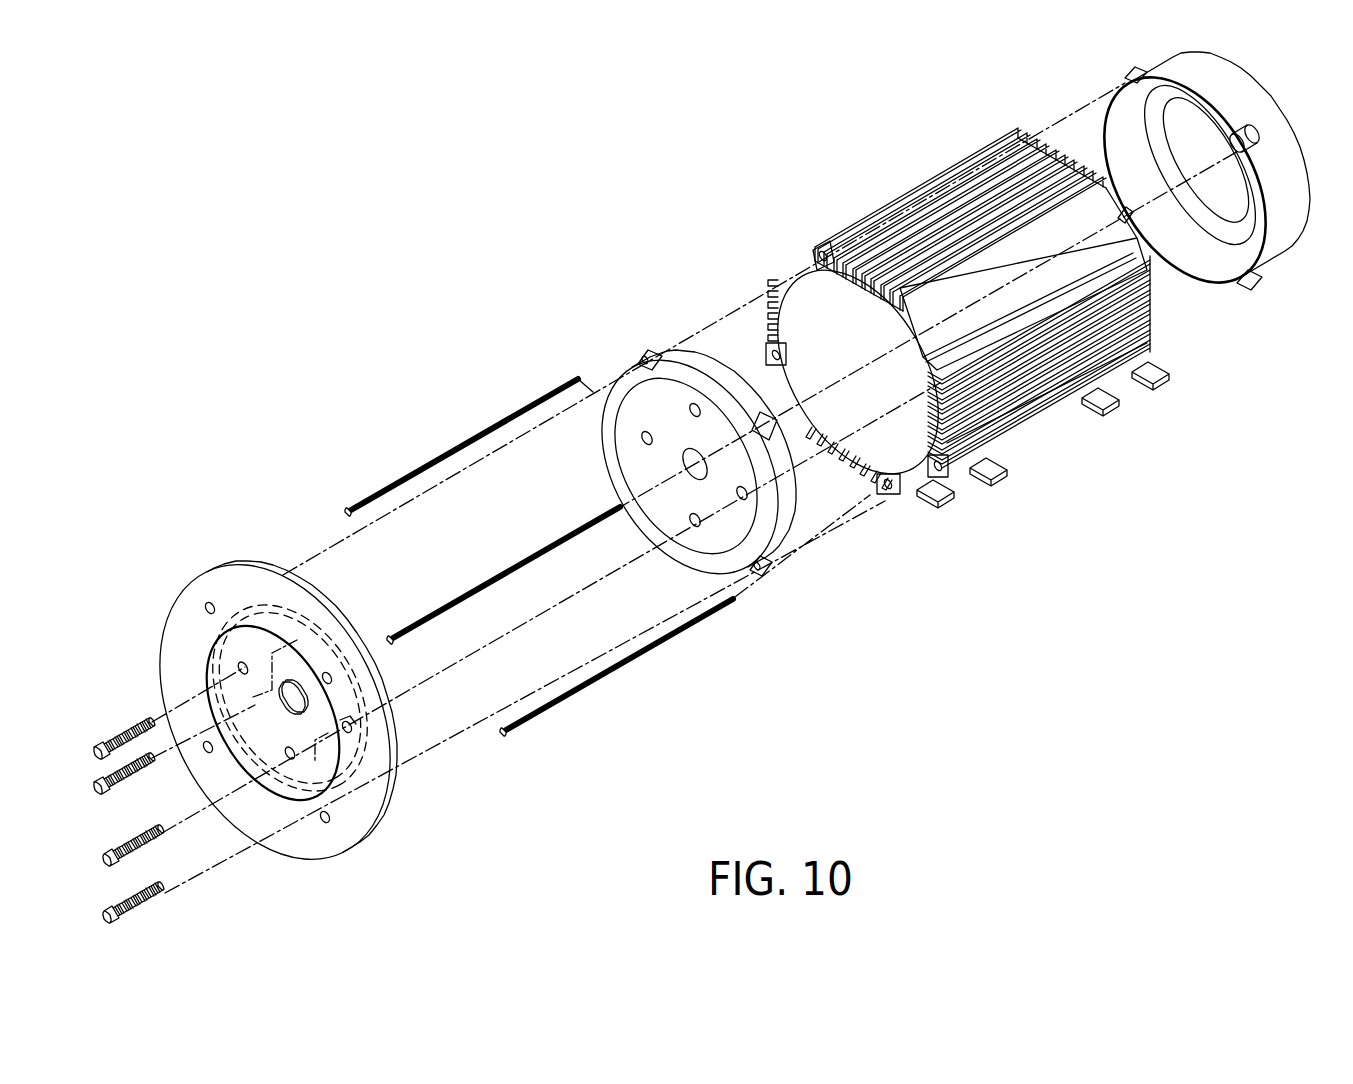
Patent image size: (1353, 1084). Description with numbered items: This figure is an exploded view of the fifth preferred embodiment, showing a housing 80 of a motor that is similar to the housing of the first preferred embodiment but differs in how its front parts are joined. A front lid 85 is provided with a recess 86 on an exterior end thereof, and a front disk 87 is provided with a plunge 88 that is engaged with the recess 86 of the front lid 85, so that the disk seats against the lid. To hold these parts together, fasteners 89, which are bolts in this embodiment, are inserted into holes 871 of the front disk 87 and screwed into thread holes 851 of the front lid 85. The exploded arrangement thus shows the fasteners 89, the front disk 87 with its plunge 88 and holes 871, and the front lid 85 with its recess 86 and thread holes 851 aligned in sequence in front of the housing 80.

The housing 80 is at (852, 532).
The front lid 85 is at (715, 375).
The recess 86 is at (668, 405).
The thread holes 851 is at (645, 432).
The front disk 87 is at (248, 566).
The plunge 88 is at (297, 620).
The holes 871 is at (243, 666).
The fasteners 89 is at (122, 734).